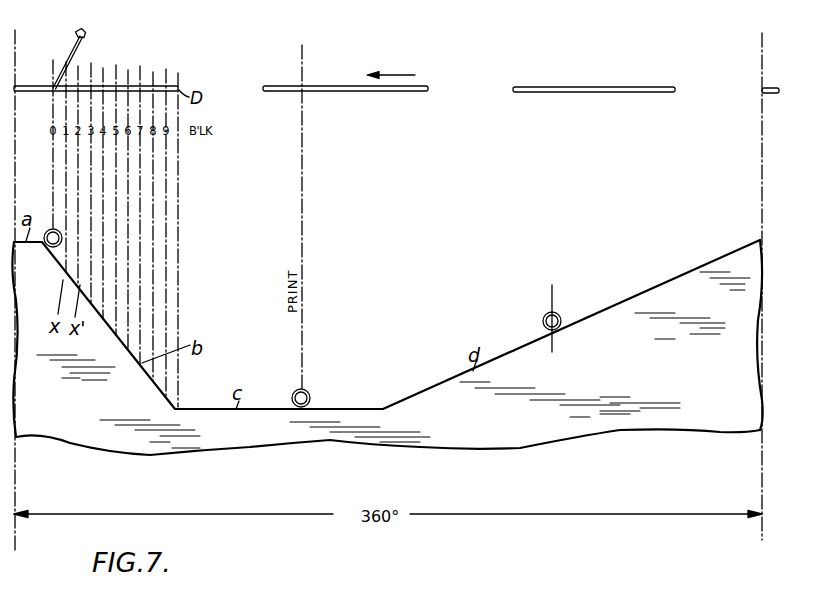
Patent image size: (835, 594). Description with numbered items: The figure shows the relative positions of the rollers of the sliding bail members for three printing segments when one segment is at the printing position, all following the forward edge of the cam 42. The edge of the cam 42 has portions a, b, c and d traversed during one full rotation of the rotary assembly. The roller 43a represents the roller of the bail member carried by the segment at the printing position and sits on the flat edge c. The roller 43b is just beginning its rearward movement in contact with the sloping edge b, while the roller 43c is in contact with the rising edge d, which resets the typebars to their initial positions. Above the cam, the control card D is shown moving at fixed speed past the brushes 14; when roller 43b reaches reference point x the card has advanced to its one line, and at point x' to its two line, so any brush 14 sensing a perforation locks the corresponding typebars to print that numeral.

The brushes 14 is at (73, 48).
The cam 42 is at (621, 424).
The roller of the bail member carried by printing segment 10a 43a is at (312, 395).
The roller of the bail member associated with segment 10b 43b is at (53, 250).
The roller of the bail member associated with segment 10c 43c is at (558, 311).